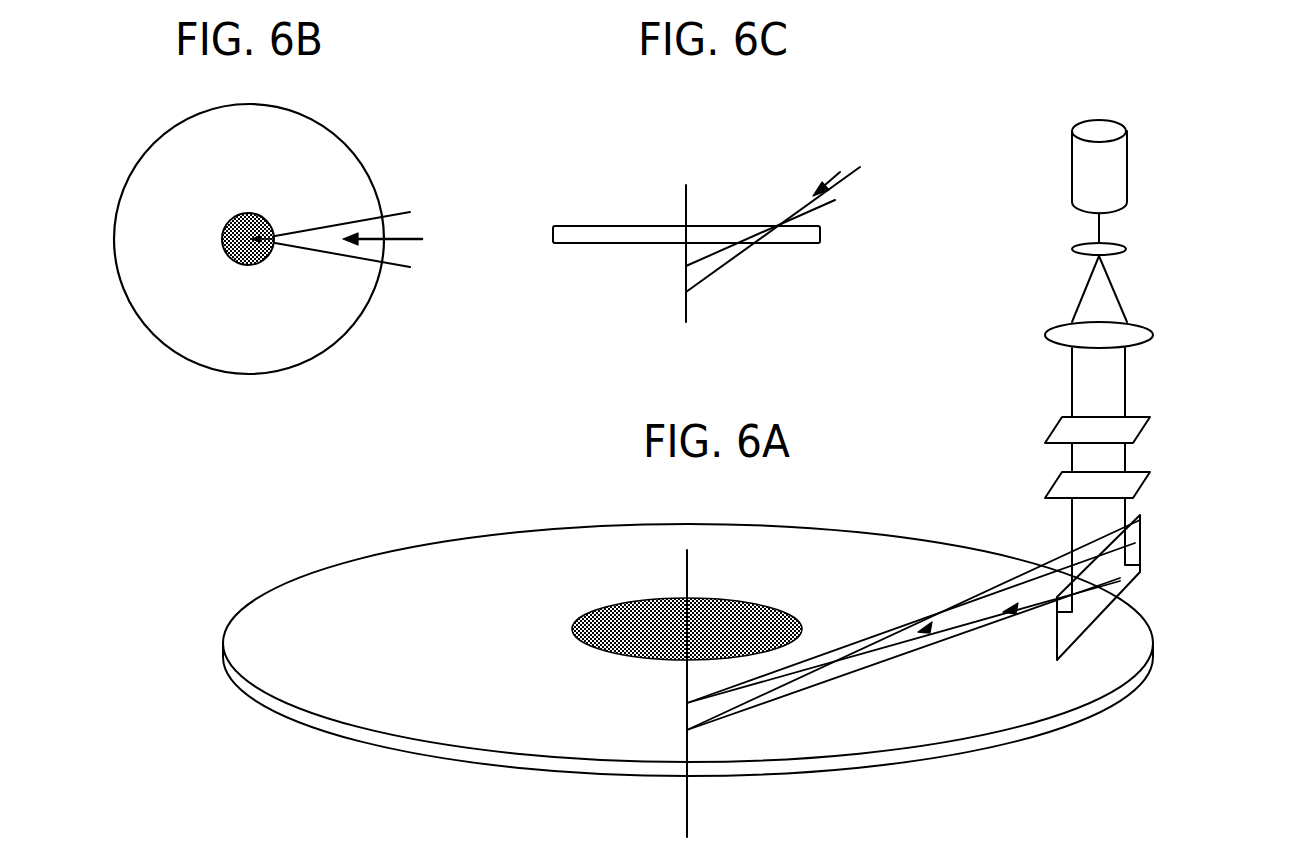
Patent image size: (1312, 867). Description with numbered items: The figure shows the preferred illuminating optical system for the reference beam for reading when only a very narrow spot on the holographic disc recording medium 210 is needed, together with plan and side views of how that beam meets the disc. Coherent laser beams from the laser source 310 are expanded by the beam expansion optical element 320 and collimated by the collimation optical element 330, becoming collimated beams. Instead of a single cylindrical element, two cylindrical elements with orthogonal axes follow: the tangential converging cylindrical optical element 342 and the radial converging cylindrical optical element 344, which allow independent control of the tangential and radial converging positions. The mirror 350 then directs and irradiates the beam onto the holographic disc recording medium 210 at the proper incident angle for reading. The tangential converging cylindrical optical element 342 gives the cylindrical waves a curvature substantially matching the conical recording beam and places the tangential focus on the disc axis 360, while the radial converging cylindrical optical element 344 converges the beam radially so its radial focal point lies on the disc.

The holographic disc recording medium 210 is at (258, 615).
The laser source 310 is at (1127, 170).
The beam expansion optical element 320 is at (1127, 249).
The collimation optical element 330 is at (1152, 335).
The tangential converging cylindrical optical element 342 is at (1150, 417).
The radial converging cylindrical optical element 344 is at (1150, 472).
The mirror 350 is at (1140, 572).
The disc axis 360 is at (688, 815).